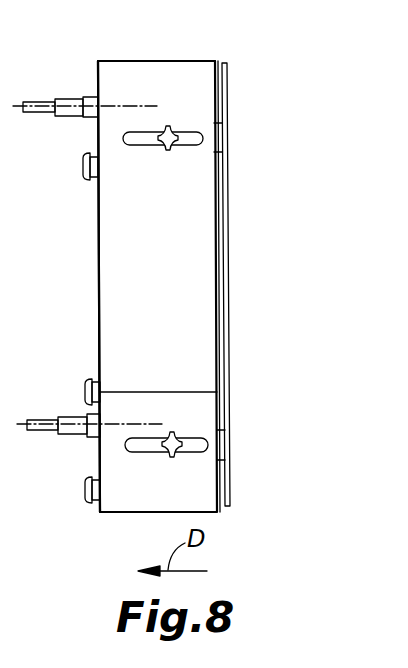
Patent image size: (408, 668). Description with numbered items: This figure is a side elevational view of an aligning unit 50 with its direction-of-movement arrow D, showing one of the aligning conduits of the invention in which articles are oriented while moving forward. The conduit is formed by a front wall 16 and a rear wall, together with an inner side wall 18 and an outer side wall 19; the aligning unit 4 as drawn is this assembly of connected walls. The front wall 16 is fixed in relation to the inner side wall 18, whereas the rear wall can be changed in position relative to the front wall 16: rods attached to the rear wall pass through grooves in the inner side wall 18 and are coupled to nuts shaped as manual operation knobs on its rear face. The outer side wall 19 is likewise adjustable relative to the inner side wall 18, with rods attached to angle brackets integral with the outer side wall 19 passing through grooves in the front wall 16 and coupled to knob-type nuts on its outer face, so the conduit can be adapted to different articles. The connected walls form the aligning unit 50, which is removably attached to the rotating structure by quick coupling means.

The coupling housing 4 is at (163, 51).
The front wall 16 is at (133, 237).
The inner side wall 18 is at (98, 212).
The outer side wall 19 is at (228, 257).
The aligning unit 50 is at (86, 298).